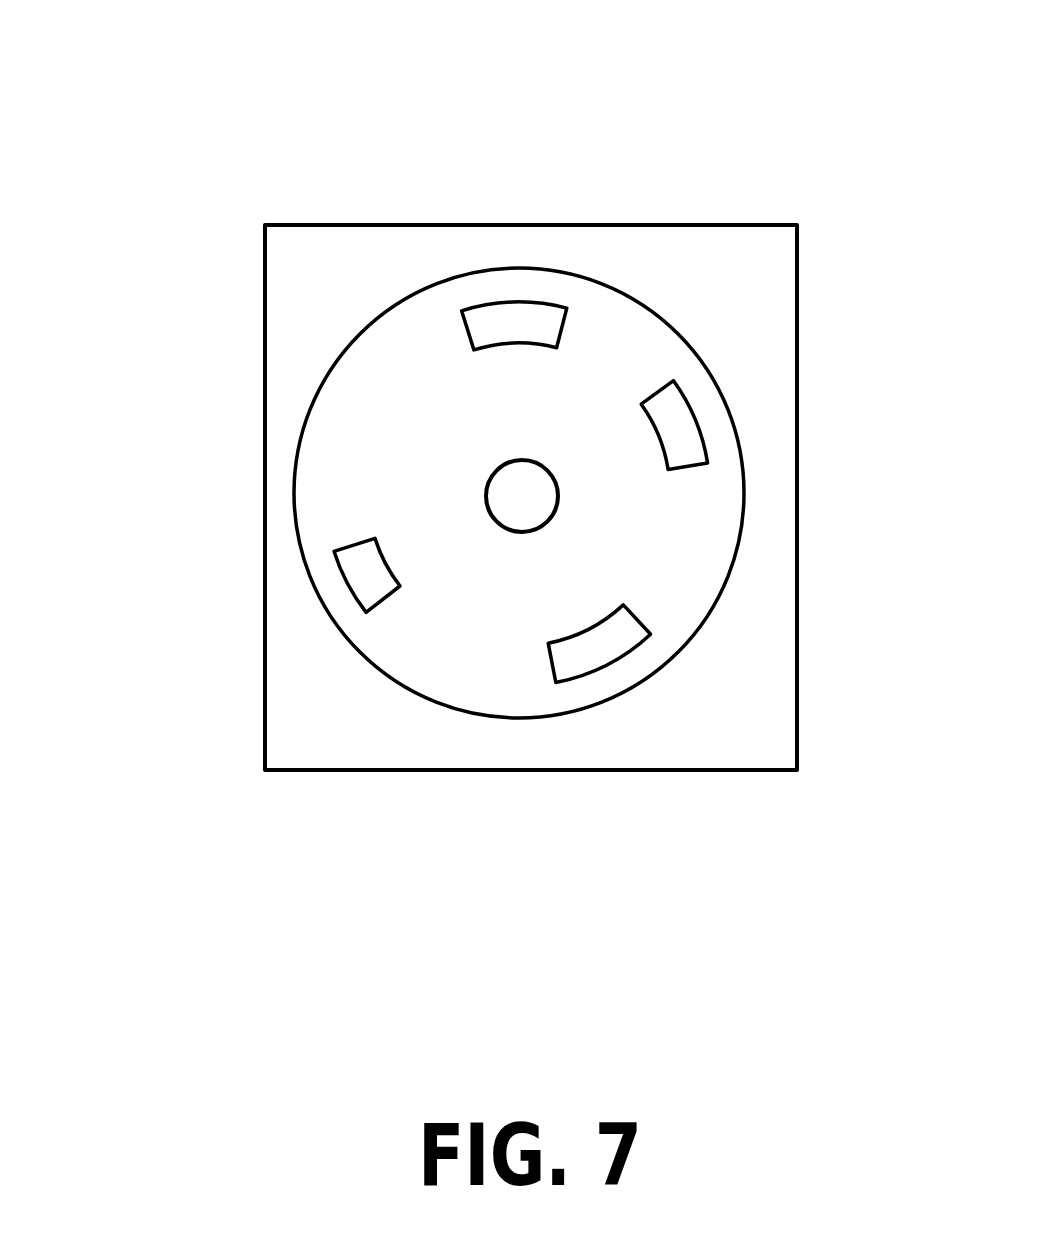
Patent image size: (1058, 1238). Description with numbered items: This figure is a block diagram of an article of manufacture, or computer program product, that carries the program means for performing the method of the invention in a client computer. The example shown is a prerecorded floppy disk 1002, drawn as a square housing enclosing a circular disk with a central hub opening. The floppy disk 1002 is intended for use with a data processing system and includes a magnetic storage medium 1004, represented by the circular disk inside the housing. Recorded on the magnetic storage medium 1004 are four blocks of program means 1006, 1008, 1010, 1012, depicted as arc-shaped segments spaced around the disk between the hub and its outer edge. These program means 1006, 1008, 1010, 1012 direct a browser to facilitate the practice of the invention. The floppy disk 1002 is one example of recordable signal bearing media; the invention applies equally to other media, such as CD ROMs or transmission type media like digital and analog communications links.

The prerecorded floppy disk 1002 is at (531, 386).
The magnetic storage medium 1004 is at (670, 530).
The program means 1006 is at (680, 432).
The program means 1008 is at (537, 320).
The program means 1010 is at (358, 573).
The program means 1012 is at (578, 660).